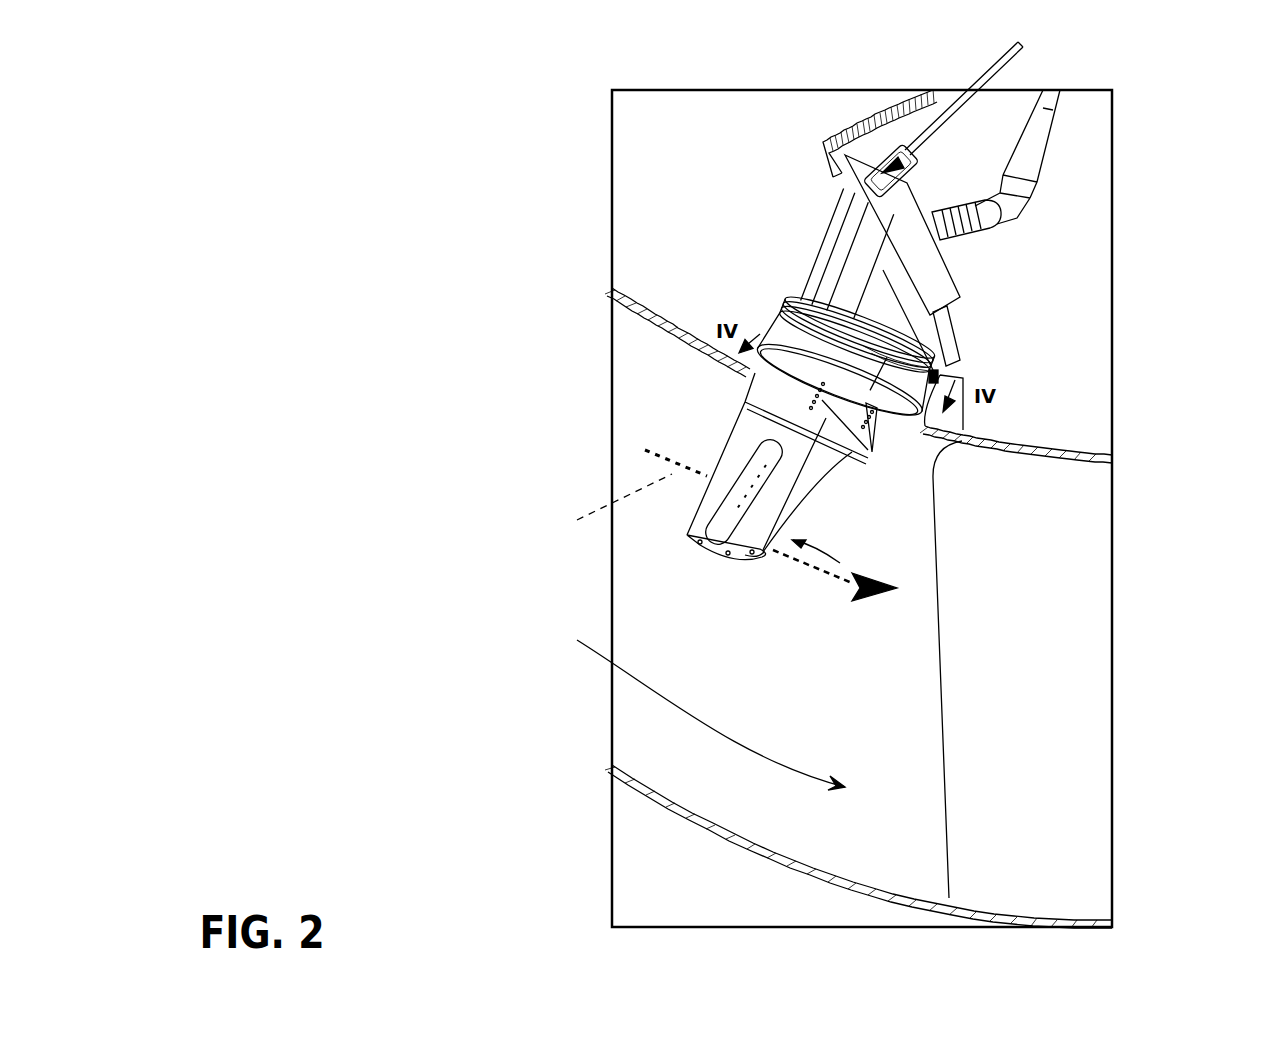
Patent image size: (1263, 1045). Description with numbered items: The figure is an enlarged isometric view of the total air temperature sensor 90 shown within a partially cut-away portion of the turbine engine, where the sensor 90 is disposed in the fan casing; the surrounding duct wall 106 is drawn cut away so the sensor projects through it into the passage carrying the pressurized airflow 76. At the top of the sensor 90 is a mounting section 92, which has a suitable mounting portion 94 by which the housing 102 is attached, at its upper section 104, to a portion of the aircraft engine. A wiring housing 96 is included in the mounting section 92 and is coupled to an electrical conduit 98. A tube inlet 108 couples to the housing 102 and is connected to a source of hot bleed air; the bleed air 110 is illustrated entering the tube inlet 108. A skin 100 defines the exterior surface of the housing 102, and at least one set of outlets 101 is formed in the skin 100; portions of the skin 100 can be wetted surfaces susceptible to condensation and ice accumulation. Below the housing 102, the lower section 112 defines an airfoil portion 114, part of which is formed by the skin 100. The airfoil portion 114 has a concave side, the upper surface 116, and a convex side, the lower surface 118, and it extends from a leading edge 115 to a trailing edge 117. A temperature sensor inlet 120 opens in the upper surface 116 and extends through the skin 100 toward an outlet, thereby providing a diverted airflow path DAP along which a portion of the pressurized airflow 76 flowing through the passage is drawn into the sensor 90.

The pressurized airflow 76 is at (672, 705).
The total air temperature sensor 90 is at (848, 478).
The mounting section 92 is at (965, 280).
The mounting portion 94 is at (940, 338).
The wiring housing 96 is at (862, 288).
The electrical conduit 98 is at (1017, 218).
The skin 100 is at (823, 413).
The outlets 101 is at (872, 439).
The housing 102 is at (757, 395).
The upper section 104 is at (760, 325).
The duct wall 106 is at (1077, 450).
The tube inlet 108 is at (900, 185).
The bleed air 110 is at (996, 66).
The lower section 112 is at (833, 558).
The airfoil portion 114 is at (718, 540).
The leading edge 115 is at (727, 472).
The upper surface 116 is at (718, 535).
The trailing edge 117 is at (765, 552).
The lower surface 118 is at (738, 555).
The temperature sensor inlet 120 is at (748, 486).
The diverted airflow path DAP is at (595, 508).